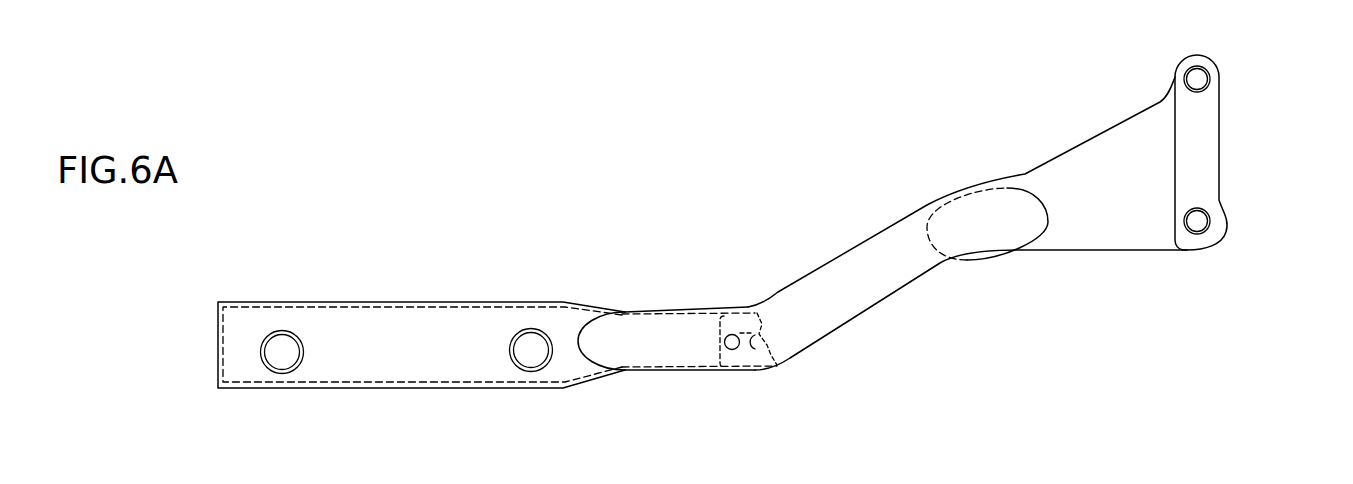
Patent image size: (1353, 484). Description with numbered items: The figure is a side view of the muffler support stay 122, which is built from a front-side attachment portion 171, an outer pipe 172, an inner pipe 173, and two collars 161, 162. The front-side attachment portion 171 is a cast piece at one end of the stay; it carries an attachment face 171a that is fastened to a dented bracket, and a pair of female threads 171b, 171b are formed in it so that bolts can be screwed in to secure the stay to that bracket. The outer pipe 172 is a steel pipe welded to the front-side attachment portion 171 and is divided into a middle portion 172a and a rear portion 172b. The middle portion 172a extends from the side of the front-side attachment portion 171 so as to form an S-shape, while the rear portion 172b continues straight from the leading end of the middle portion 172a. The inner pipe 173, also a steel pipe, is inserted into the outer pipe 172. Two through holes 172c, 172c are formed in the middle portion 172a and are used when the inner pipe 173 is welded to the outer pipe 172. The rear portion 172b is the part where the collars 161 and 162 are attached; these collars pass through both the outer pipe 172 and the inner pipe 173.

The muffler support stay 122 is at (552, 226).
The collar 161 is at (513, 372).
The collar 162 is at (272, 373).
The front-side attachment portion 171 is at (1077, 149).
The attachment face 171a is at (1206, 153).
The female thread 171b is at (1203, 73).
The outer pipe 172 is at (814, 261).
The middle portion 172a is at (878, 297).
The rear portion 172b is at (403, 366).
The through hole 172c is at (732, 352).
The inner pipe 173 is at (692, 313).